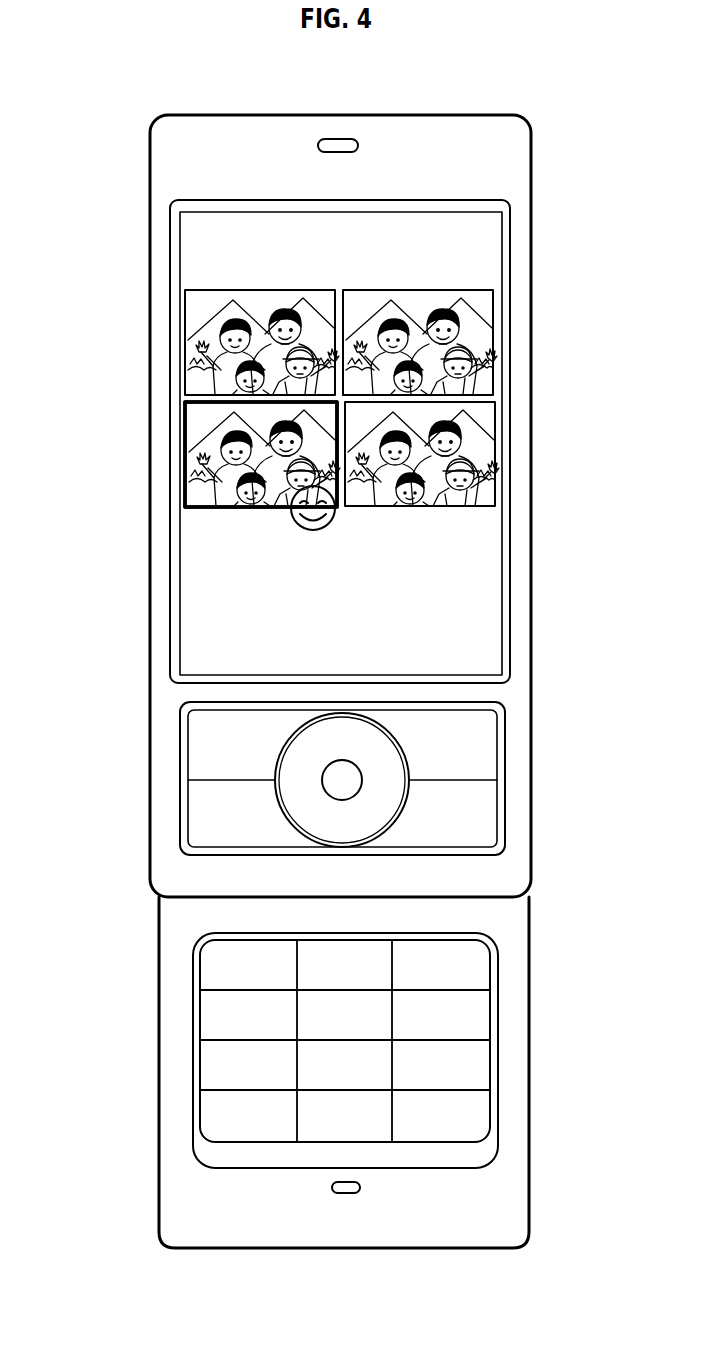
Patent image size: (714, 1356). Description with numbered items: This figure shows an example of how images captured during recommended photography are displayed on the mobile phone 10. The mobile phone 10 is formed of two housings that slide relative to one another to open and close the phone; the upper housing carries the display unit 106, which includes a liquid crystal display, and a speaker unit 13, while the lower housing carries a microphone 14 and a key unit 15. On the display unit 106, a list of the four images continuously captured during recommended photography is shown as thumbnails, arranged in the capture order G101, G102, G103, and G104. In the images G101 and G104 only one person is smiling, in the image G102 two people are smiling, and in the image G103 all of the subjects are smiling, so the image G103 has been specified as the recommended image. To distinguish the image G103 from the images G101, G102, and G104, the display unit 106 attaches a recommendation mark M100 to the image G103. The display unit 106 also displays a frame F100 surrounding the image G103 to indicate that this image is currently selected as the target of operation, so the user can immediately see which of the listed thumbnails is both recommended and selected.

The mobile phone 10 is at (497, 115).
The speaker unit 13 is at (345, 139).
The microphone 14 is at (346, 1195).
The key unit 15 is at (478, 1023).
The display unit 106 is at (484, 244).
The image G101 is at (185, 302).
The image G102 is at (487, 308).
The image G103 is at (187, 416).
The image G104 is at (487, 422).
The frame F100 is at (200, 508).
The recommendation mark M100 is at (294, 528).